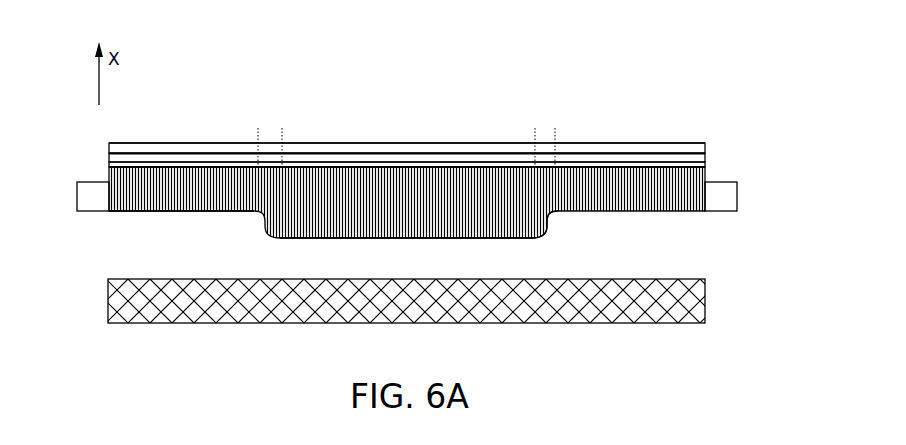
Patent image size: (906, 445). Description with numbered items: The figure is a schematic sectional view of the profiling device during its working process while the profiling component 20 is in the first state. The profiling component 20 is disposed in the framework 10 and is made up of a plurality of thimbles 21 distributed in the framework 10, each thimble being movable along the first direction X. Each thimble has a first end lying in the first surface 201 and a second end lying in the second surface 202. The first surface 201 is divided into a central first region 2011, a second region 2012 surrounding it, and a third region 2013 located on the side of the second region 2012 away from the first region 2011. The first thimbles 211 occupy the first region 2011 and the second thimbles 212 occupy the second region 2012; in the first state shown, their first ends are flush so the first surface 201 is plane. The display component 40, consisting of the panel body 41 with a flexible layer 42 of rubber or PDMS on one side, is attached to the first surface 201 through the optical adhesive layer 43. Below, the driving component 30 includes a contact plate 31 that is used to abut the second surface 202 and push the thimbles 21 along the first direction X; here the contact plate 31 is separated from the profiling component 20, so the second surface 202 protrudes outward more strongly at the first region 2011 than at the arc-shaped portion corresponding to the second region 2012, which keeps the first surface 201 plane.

The framework 10 is at (720, 182).
The profiling component 20 is at (707, 177).
The thimbles 21 is at (682, 177).
The first surface 201 is at (170, 167).
The second surface 202 is at (177, 211).
The first thimbles 211 is at (413, 238).
The second thimbles 212 is at (547, 238).
The first region 2011 is at (393, 140).
The second region 2012 is at (272, 136).
The third region 2013 is at (227, 135).
The display component 40 is at (356, 143).
The panel body 41 is at (108, 143).
The flexible layer 42 is at (108, 154).
The optical adhesive layer 43 is at (108, 163).
The driving component 30 is at (436, 297).
The contact plate 31 is at (705, 300).